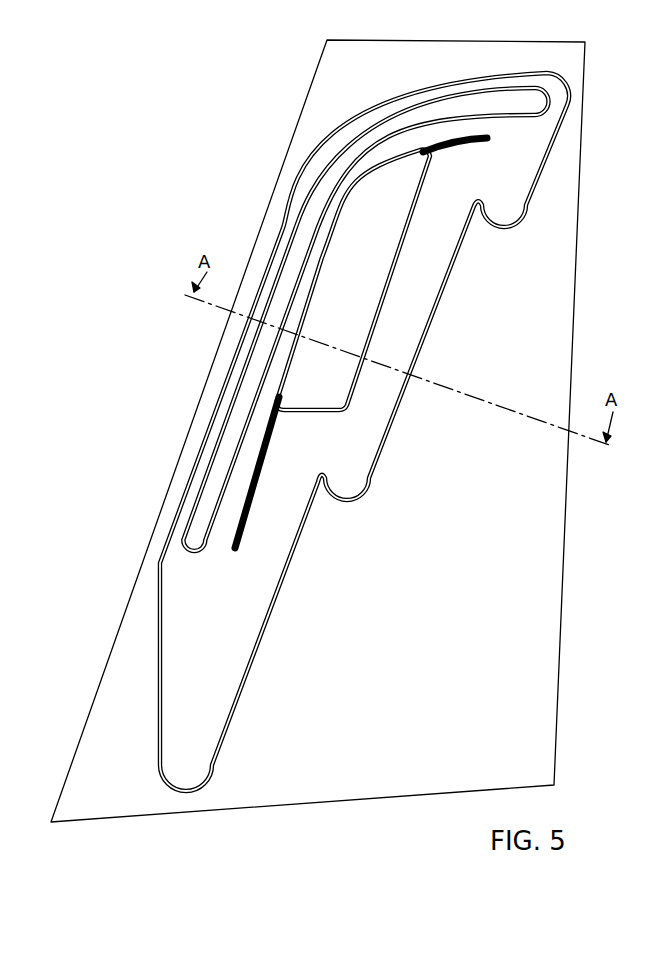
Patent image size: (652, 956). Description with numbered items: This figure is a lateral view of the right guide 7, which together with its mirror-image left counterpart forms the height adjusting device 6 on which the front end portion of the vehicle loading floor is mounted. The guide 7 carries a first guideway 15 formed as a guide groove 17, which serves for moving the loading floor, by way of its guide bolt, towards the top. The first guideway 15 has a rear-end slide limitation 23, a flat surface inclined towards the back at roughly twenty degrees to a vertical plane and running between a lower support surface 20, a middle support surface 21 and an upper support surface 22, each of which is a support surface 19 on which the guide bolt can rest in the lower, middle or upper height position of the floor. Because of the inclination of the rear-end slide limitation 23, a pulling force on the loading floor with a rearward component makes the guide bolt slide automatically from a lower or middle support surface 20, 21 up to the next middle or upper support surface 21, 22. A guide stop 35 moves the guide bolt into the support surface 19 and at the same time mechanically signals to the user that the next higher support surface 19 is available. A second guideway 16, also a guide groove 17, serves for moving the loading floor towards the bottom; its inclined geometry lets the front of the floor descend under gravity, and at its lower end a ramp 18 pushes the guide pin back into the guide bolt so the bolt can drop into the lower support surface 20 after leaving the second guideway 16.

The height adjusting device 6 is at (318, 431).
The guide 7 is at (172, 412).
The first guideway 15 is at (310, 399).
The second guideway 16 is at (327, 279).
The guide groove 17 is at (310, 399).
The ramp 18 is at (466, 105).
The support surface 19 is at (310, 399).
The lower support surface 20 is at (310, 399).
The middle support surface 21 is at (310, 399).
The upper support surface 22 is at (420, 288).
The rear-end slide limitation 23 is at (310, 399).
The guide stop 35 is at (453, 147).